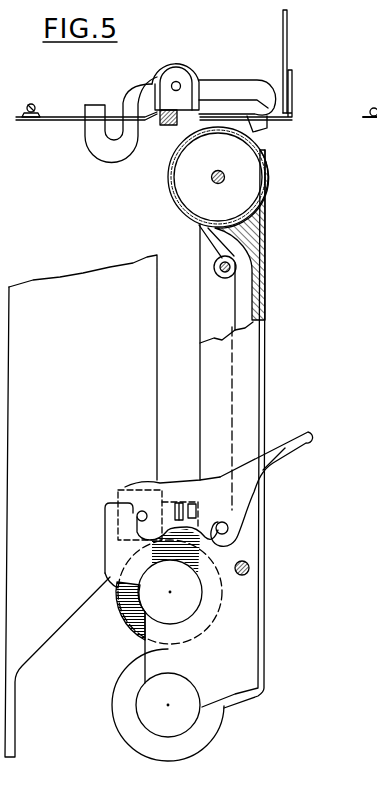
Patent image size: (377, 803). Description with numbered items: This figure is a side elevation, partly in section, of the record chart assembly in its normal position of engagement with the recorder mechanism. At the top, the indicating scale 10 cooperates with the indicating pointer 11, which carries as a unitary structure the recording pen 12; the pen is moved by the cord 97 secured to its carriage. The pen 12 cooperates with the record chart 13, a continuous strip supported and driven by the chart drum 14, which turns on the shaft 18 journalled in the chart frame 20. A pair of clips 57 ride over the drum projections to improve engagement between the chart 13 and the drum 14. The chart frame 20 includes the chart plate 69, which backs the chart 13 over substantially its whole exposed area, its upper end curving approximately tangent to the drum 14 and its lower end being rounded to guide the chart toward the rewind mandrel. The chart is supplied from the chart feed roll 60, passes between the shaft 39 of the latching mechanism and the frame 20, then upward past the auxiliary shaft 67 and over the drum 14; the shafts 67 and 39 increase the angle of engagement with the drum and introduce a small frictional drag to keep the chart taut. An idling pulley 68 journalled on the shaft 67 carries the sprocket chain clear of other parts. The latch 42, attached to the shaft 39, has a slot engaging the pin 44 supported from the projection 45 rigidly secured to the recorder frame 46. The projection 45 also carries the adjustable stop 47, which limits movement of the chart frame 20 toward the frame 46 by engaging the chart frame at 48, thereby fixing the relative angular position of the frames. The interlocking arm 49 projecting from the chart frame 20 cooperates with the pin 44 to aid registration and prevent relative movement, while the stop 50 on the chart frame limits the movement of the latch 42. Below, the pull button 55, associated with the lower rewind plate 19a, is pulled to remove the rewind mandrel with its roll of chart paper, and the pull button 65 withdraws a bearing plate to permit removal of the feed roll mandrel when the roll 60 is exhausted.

The indicating scale 10 is at (285, 48).
The indicating pointer 11 is at (293, 93).
The recording pen 12 is at (232, 90).
The cord 97 is at (162, 126).
The chart drum 14 is at (169, 168).
The shaft 18 is at (212, 181).
The clips 57 is at (270, 203).
The chart plate 69 is at (263, 303).
The record chart 13 is at (267, 356).
The idling pulley 68 is at (218, 271).
The auxiliary shaft 67 is at (221, 264).
The chart frame 20 is at (247, 405).
The recorder frame 46 is at (30, 642).
The interlocking arm 49 is at (113, 548).
The latch 42 is at (276, 473).
The shaft 39 is at (229, 531).
The projection 45 is at (118, 491).
The pin 44 is at (137, 516).
The adjustable stop 47 is at (180, 506).
The chart frame engagement point 48 is at (199, 506).
The chart feed roll 60 is at (118, 602).
The pull button 65 is at (158, 598).
The stop 50 is at (248, 574).
The pull button 55 is at (150, 720).
The rewind plate 19a is at (203, 738).